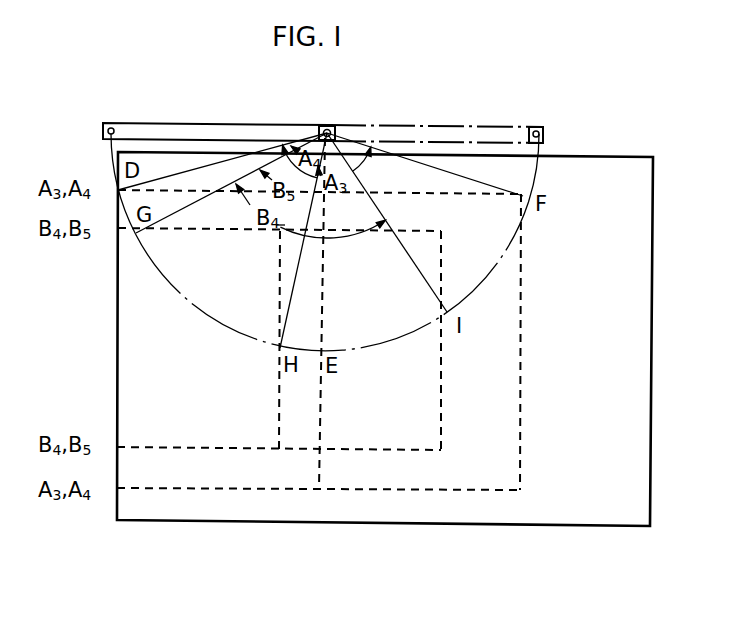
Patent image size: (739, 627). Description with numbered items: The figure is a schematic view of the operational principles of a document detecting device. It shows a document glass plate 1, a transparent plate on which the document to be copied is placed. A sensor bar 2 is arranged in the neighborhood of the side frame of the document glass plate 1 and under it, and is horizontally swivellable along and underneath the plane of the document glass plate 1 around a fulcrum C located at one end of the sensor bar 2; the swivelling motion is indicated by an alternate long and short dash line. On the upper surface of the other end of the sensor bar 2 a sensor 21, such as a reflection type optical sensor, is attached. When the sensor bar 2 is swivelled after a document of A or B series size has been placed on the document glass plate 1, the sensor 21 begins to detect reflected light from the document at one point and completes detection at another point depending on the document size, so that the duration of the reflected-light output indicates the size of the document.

The document glass plate 1 is at (585, 171).
The sensor bar 2 is at (222, 130).
The sensor 21 is at (113, 128).
The fulcrum C is at (327, 128).